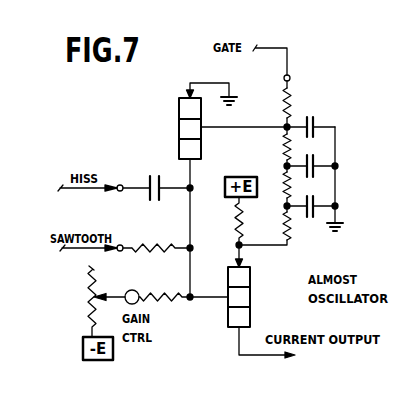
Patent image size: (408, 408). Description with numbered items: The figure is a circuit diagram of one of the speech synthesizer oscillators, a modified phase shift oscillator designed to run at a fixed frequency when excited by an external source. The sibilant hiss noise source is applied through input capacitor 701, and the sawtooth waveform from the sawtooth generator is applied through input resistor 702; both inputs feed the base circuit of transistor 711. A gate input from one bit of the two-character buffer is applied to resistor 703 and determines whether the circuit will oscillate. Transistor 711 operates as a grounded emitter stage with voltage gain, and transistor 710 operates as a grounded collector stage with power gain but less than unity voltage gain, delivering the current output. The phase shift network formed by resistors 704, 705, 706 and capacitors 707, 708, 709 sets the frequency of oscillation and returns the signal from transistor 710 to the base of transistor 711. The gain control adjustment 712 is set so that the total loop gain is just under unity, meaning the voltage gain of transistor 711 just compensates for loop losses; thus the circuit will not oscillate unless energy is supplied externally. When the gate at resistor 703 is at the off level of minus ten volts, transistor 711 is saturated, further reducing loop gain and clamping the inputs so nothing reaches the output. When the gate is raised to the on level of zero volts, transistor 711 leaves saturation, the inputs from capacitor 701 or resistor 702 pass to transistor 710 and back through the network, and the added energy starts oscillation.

The input capacitor 701 is at (156, 176).
The input resistor 702 is at (154, 245).
The gate input resistor 703 is at (283, 92).
The resistor 704 is at (283, 156).
The resistor 705 is at (283, 180).
The resistor 706 is at (283, 226).
The capacitor 707 is at (311, 115).
The capacitor 708 is at (310, 154).
The capacitor 709 is at (310, 195).
The transistor 710 is at (252, 297).
The transistor 711 is at (179, 128).
The gain control adjustment 712 is at (137, 290).